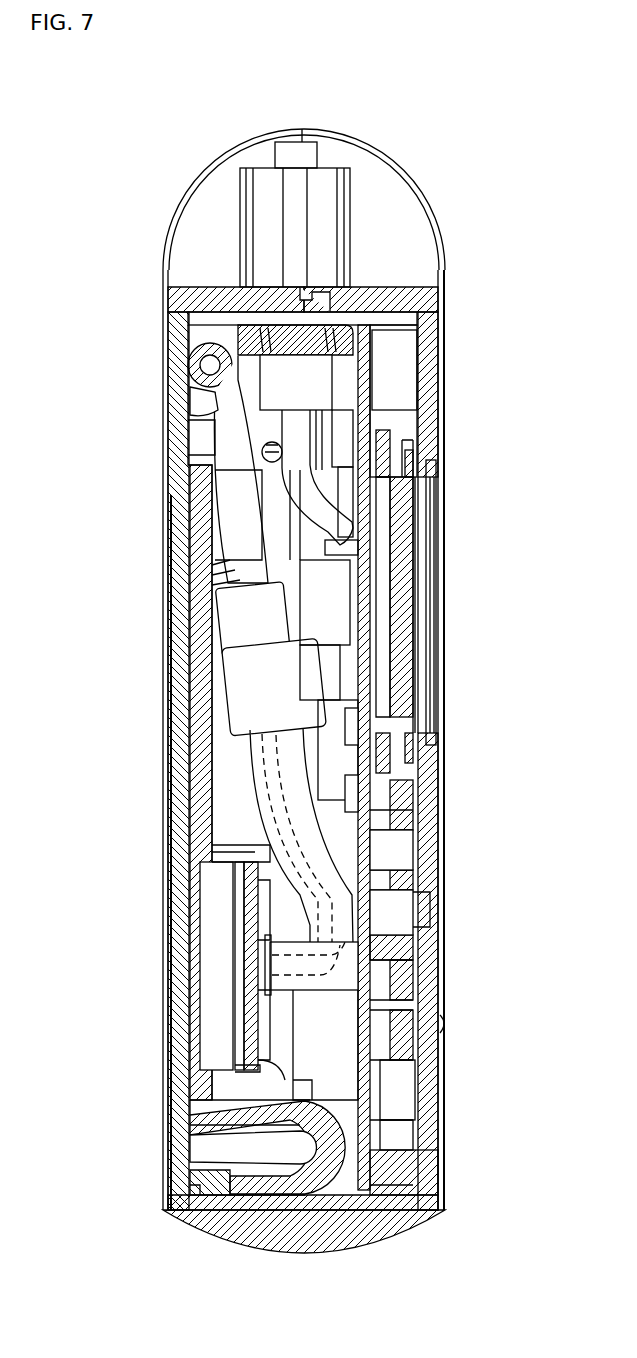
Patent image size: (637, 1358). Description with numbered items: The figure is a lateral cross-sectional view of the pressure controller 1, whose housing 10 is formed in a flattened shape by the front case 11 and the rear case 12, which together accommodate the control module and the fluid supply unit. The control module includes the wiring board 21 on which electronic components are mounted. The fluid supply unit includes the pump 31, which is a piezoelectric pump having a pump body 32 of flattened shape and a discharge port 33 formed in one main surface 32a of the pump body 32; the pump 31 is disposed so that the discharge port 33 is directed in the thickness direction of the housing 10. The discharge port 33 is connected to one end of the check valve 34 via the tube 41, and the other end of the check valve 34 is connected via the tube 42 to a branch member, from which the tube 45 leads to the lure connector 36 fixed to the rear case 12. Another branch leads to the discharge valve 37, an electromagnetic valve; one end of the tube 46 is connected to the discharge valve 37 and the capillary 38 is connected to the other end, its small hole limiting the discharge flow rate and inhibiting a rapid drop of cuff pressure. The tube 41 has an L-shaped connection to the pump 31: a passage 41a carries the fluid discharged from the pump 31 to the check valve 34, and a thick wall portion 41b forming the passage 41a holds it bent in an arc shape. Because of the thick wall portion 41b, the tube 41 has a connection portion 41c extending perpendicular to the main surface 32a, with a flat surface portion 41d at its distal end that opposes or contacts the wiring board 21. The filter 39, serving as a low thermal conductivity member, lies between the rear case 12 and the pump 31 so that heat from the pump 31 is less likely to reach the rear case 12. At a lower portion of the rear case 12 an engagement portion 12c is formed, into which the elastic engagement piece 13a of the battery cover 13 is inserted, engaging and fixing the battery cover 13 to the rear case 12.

The pressure controller 1 is at (424, 133).
The housing 10 is at (342, 82).
The front case 11 is at (323, 128).
The rear case 12 is at (275, 128).
The engagement portion 12c is at (279, 1196).
The battery cover 13 is at (171, 845).
The elastic engagement piece 13a is at (255, 1186).
The wiring board 21 is at (437, 903).
The pump 31 is at (108, 975).
The pump body 32 is at (235, 968).
The main surface 32a is at (235, 1068).
The discharge port 33 is at (240, 1008).
The check valve 34 is at (237, 704).
The lure connector 36 is at (352, 232).
The discharge valve 37 is at (357, 672).
The capillary 38 is at (262, 455).
The filter 39 is at (215, 890).
The tube 41 is at (258, 784).
The passage 41a is at (290, 818).
The thick wall portion 41b is at (340, 980).
The connection portion 41c is at (307, 985).
The flat surface portion 41d is at (370, 975).
The tube 42 is at (228, 495).
The tube 45 is at (400, 523).
The tube 46 is at (398, 583).